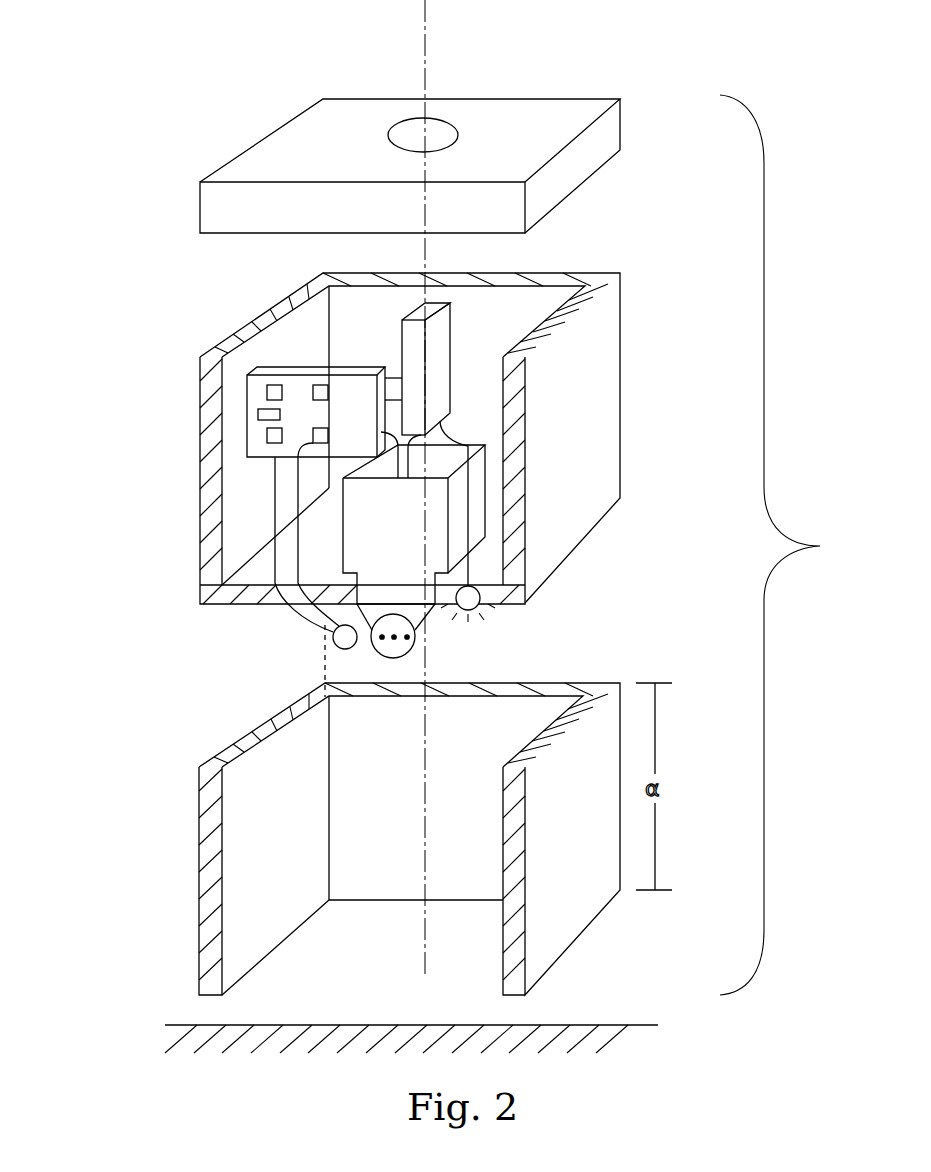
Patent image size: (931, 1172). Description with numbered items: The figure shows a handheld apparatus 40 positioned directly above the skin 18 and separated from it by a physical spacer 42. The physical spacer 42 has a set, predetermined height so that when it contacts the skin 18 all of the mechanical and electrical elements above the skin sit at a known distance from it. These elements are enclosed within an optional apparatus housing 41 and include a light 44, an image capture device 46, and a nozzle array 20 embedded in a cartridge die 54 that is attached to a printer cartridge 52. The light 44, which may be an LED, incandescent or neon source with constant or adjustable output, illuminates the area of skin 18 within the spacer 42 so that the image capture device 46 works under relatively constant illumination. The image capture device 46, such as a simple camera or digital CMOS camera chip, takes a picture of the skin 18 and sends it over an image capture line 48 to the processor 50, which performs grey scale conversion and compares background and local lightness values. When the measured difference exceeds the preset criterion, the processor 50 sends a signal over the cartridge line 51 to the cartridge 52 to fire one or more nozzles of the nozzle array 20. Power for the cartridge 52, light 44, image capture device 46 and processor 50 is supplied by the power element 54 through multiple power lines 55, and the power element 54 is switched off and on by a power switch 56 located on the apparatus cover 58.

The skin 18 is at (605, 1025).
The nozzle array 20 is at (397, 648).
The handheld apparatus 40 is at (788, 545).
The apparatus housing 41 is at (620, 347).
The physical spacer 42 is at (198, 912).
The light 44 is at (480, 599).
The image capture device 46 is at (333, 647).
The image capture line 48 is at (297, 613).
The processor 50 is at (247, 440).
The cartridge line 51 is at (357, 463).
The printer cartridge 52 is at (440, 533).
The cartridge die / power element 54 is at (418, 378).
The power lines 55 is at (470, 487).
The power switch 56 is at (443, 128).
The apparatus cover 58 is at (620, 148).